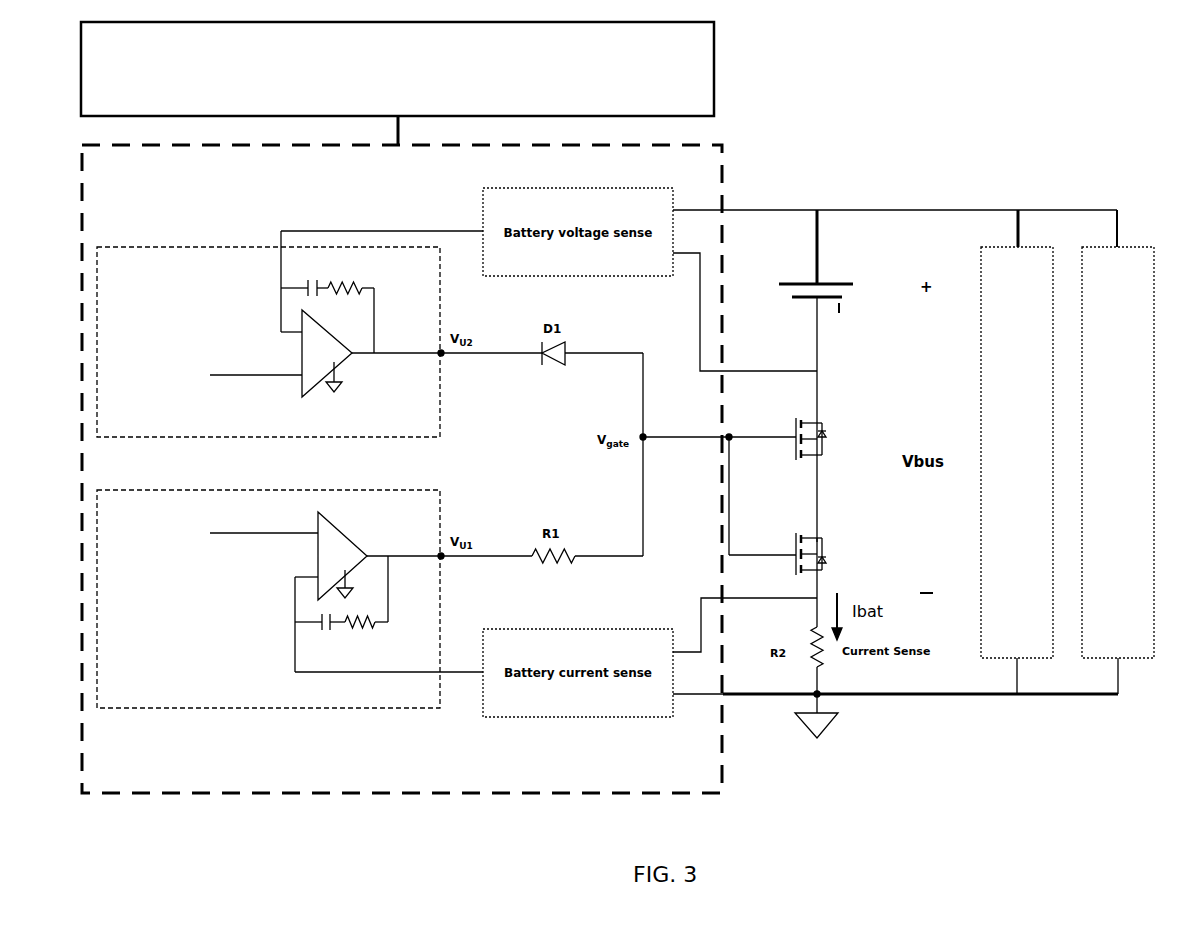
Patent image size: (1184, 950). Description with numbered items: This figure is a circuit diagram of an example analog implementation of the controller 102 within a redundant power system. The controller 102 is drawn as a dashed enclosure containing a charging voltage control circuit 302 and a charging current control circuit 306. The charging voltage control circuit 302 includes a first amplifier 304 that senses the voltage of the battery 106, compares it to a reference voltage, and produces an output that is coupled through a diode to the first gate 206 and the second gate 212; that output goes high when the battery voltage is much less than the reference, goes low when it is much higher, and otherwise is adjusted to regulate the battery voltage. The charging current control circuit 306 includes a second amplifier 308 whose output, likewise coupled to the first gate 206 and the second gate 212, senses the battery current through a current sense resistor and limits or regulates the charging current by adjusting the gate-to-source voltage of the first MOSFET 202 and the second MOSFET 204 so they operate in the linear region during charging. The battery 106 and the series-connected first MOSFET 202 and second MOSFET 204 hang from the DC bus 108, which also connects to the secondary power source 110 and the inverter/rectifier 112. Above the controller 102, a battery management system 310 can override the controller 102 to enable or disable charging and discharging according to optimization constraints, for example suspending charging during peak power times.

The battery management system 310 is at (397, 69).
The controller 102 is at (402, 469).
The charging voltage control circuit 302 is at (243, 247).
The first amplifier 304 is at (345, 362).
The charging current control circuit 306 is at (202, 490).
The second amplifier 308 is at (337, 530).
The battery 106 is at (822, 281).
The DC bus 108 is at (952, 209).
The secondary power source 110 is at (1030, 246).
The inverter/rectifier 112 is at (1110, 246).
The first MOSFET 202 is at (818, 423).
The second MOSFET 204 is at (818, 538).
The first gate 206 is at (783, 437).
The second gate 212 is at (790, 555).